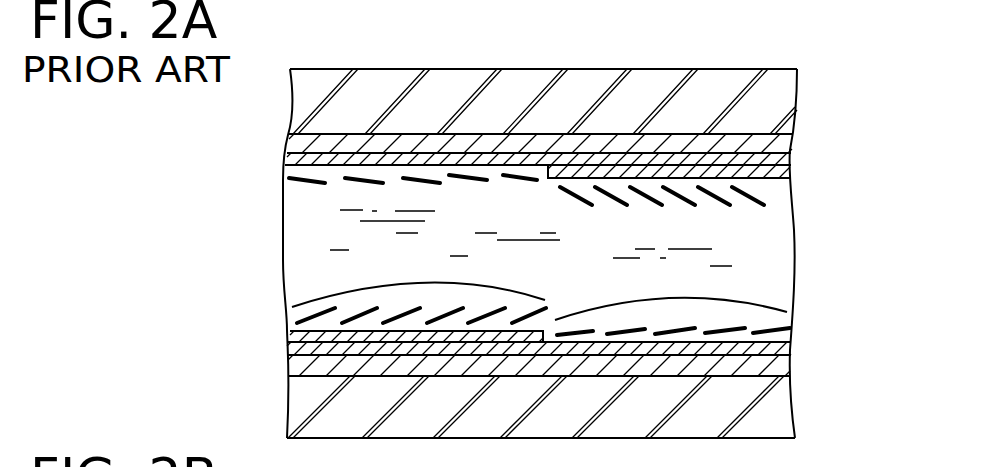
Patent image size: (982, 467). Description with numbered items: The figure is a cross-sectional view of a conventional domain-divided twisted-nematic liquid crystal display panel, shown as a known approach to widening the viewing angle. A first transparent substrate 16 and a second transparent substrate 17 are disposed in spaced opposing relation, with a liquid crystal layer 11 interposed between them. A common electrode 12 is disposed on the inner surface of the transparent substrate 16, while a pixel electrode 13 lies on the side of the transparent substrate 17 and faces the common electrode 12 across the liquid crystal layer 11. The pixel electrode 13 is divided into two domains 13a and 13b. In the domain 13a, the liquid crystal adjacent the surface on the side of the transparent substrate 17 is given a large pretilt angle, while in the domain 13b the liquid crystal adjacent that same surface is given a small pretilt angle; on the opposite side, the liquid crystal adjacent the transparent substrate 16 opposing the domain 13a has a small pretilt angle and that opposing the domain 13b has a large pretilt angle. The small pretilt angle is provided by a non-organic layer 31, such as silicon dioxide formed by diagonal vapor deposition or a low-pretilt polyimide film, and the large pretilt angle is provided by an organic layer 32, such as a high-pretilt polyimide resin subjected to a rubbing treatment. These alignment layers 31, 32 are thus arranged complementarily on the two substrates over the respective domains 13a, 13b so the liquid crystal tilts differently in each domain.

The transparent substrate 16 is at (770, 107).
The common electrode 12 is at (292, 147).
The non-organic layer 31 is at (286, 160).
The organic layer 32 is at (787, 173).
The liquid crystal layer 11 is at (785, 241).
The domain 13a is at (345, 287).
The domain 13b is at (767, 298).
The pixel electrode 13 is at (793, 373).
The transparent substrate 17 is at (773, 428).